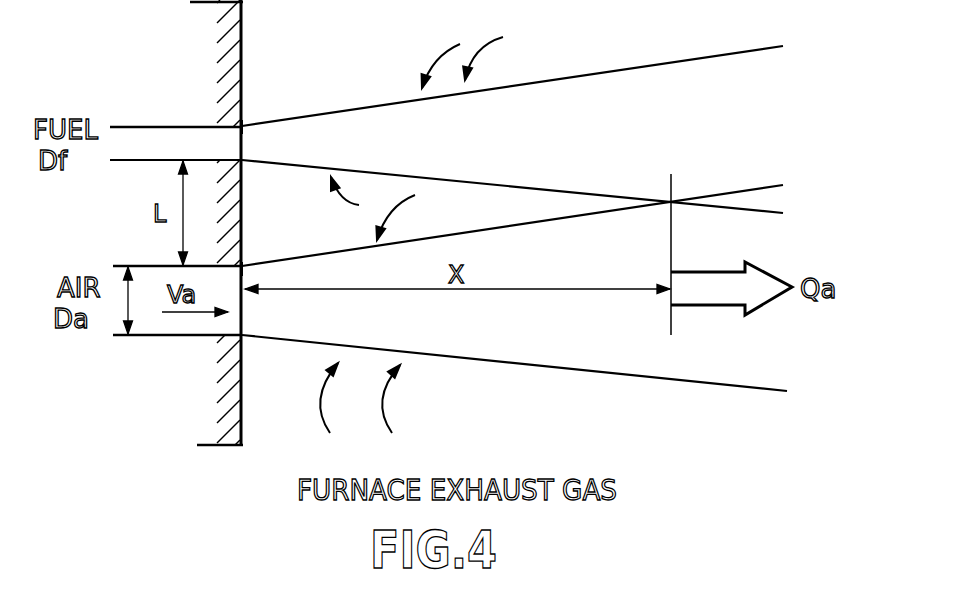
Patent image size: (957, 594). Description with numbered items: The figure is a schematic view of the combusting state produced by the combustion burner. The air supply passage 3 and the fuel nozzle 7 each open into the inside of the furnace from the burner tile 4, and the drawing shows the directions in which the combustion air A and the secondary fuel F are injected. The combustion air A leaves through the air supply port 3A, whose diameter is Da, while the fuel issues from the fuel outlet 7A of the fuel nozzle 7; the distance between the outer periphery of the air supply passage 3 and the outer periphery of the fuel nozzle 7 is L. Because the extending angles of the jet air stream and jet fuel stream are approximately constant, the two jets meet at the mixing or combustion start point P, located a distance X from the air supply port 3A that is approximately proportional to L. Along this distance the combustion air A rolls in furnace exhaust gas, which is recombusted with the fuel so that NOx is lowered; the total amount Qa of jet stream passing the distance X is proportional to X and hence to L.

The air supply passage 3 is at (183, 335).
The air supply port 3A is at (242, 280).
The burner tile 4 is at (240, 33).
The fuel nozzle 7 is at (180, 126).
The fuel nozzle outlet 7A is at (242, 138).
The secondary fuel F is at (667, 62).
The combustion air A is at (675, 380).
The combustion start point P is at (671, 204).